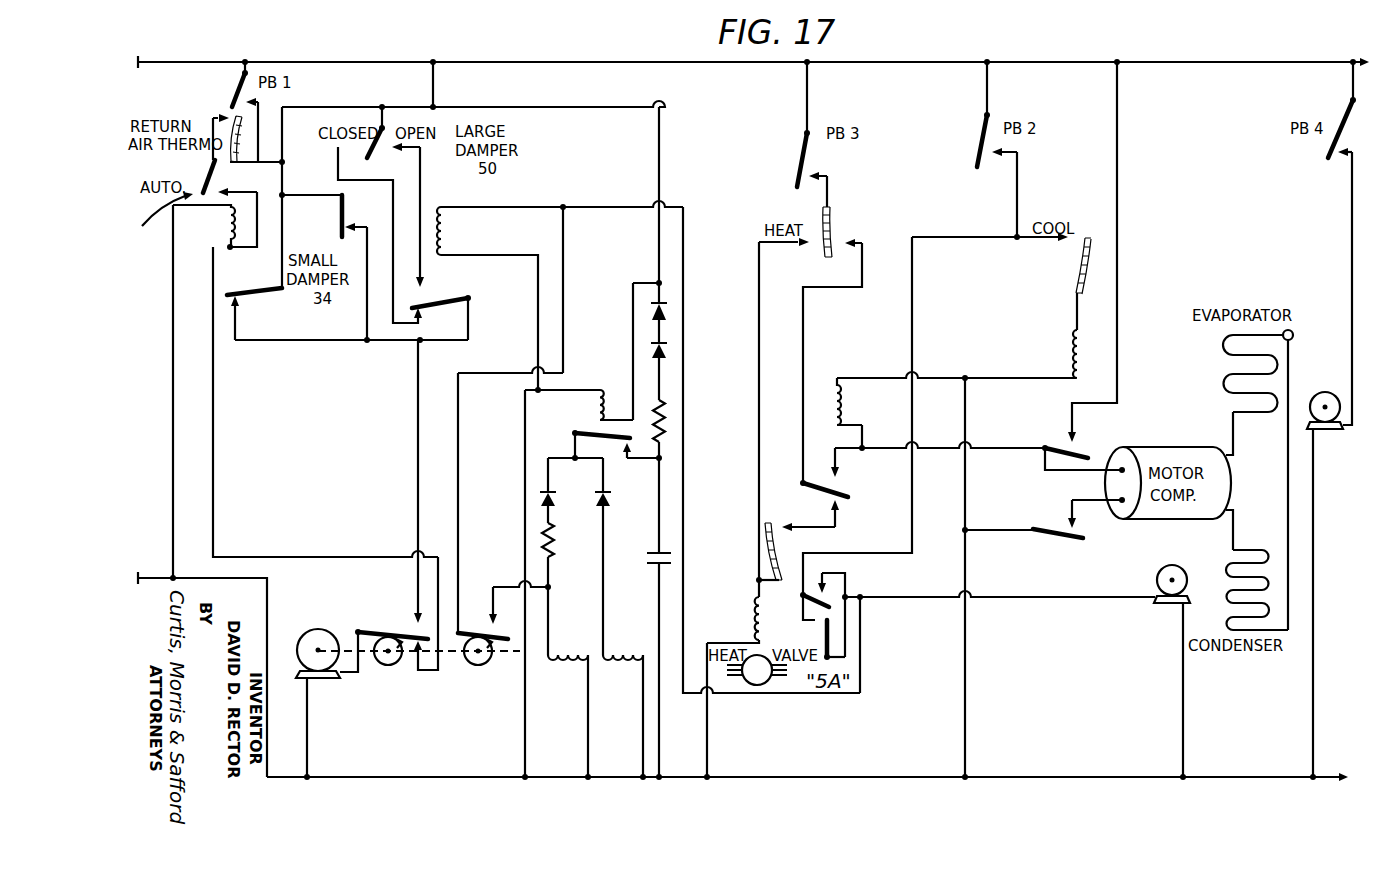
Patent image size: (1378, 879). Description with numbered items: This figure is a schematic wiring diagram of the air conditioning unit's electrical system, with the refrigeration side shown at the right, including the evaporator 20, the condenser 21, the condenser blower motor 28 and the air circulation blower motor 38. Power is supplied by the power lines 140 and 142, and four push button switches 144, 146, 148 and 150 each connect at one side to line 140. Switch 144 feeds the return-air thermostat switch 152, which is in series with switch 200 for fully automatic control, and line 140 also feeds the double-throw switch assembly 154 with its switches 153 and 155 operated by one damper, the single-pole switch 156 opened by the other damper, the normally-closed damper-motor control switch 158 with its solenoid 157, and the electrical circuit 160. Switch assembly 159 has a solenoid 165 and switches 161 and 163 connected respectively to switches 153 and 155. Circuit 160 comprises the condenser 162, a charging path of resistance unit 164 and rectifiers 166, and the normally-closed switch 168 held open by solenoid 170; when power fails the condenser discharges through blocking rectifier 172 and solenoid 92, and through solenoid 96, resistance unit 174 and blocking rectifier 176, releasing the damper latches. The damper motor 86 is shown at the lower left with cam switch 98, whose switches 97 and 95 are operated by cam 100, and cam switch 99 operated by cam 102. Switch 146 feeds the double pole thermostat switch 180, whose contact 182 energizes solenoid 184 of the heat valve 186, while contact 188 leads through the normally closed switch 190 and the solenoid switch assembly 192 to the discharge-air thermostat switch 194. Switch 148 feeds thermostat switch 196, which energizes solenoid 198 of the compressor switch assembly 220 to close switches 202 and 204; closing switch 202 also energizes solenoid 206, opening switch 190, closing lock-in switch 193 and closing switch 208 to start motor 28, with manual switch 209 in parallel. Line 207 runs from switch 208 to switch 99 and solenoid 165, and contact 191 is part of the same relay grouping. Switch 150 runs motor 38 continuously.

The power line 140 is at (316, 62).
The push button control switch 144 is at (219, 94).
The thermostat switch 152 is at (189, 164).
The switch 200 is at (160, 218).
The solenoid 157 is at (226, 223).
The double-throw switch assembly 154 is at (356, 147).
The switch 153 is at (353, 160).
The switch 155 is at (388, 160).
The single-pole switch 156 is at (328, 231).
The damper-motor control switch 158 is at (252, 303).
The switch assembly 159 is at (456, 197).
The solenoid 165 is at (450, 246).
The switch 163 is at (432, 292).
The switch 161 is at (434, 318).
The line 207 is at (626, 207).
The electrical circuit 160 is at (633, 272).
The rectifiers 166 is at (673, 348).
The solenoid 170 is at (595, 405).
The resistance unit 164 is at (668, 413).
The normally-closed switch 168 is at (620, 442).
The blocking rectifier 176 is at (554, 502).
The blocking rectifier 172 is at (609, 502).
The resistance unit 174 is at (552, 545).
The condenser 162 is at (646, 553).
The cam-releasing solenoid 96 is at (569, 653).
The cam-releasing solenoid 92 is at (621, 653).
The damper motor 86 is at (316, 630).
The switch 95 is at (404, 618).
The cam 100 is at (381, 662).
The cam switch 98 is at (386, 674).
The switch 97 is at (411, 664).
The cam 102 is at (473, 668).
The cam switch 99 is at (507, 668).
The power line 142 is at (453, 774).
The push button control switch 146 is at (787, 186).
The double pole thermostat switch 180 is at (832, 203).
The contact 188 is at (848, 242).
The contact 182 is at (796, 252).
The solenoid switch assembly 192 is at (818, 382).
The solenoid 206 is at (842, 380).
The push button control switch 148 is at (972, 173).
The thermostat switch 196 is at (1067, 254).
The solenoid 198 is at (1071, 358).
The push button control switch 150 is at (1312, 164).
The compressor switch assembly 220 is at (1123, 419).
The switch 202 is at (1101, 450).
The switch 204 is at (1093, 531).
The condenser blower motor 28 is at (1157, 579).
The condenser coil 21 is at (1266, 555).
The evaporator coil 20 is at (1229, 358).
The motor 38 is at (1333, 394).
The solenoid 184 is at (752, 606).
The manual switch 209 is at (813, 638).
The normally open switch 208 is at (861, 594).
The thermostat switch 194 is at (778, 516).
The switch 193 is at (853, 478).
The normally closed switch 190 is at (860, 501).
The relay contact 191 is at (842, 503).
The heat valve 186 is at (768, 694).